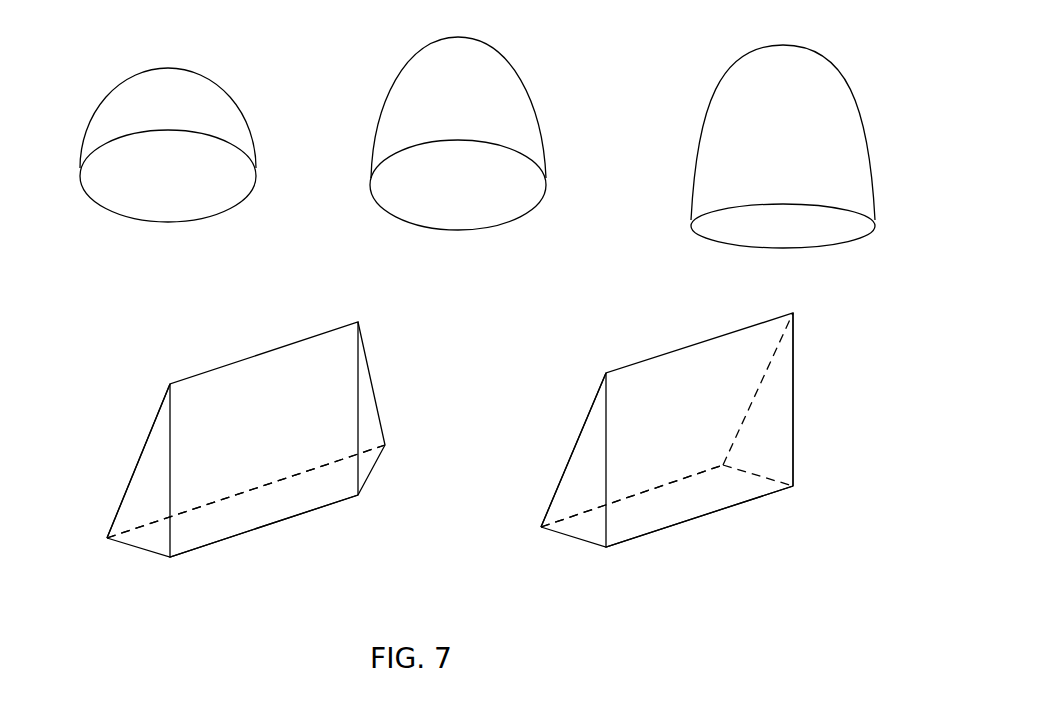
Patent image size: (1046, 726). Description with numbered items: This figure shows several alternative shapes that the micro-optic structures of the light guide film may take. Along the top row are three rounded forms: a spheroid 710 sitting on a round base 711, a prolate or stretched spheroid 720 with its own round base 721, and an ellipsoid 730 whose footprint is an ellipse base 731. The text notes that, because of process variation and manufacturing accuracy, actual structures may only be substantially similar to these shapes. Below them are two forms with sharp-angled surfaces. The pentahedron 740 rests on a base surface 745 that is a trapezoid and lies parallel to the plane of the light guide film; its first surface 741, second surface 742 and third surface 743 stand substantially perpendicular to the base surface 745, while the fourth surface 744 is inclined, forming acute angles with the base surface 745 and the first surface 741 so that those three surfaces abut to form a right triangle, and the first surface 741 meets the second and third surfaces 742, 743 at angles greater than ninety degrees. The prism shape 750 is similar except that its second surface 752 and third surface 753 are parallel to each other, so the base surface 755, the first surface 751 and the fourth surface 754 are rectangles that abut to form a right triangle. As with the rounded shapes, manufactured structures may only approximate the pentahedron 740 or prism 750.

The spheroid 710 is at (78, 111).
The round base 711 is at (193, 193).
The prolate spheroid 720 is at (363, 100).
The round base 721 is at (475, 202).
The ellipsoid 730 is at (700, 119).
The ellipse base 731 is at (807, 240).
The pentahedron 740 is at (236, 457).
The first surface 741 is at (278, 463).
The second surface 742 is at (143, 503).
The third surface 743 is at (372, 438).
The fourth surface 744 is at (152, 408).
The base surface 745 is at (233, 537).
The prism shape 750 is at (665, 446).
The first surface 751 is at (688, 450).
The second surface 752 is at (578, 492).
The third surface 753 is at (795, 427).
The fourth surface 754 is at (588, 397).
The base surface 755 is at (670, 525).